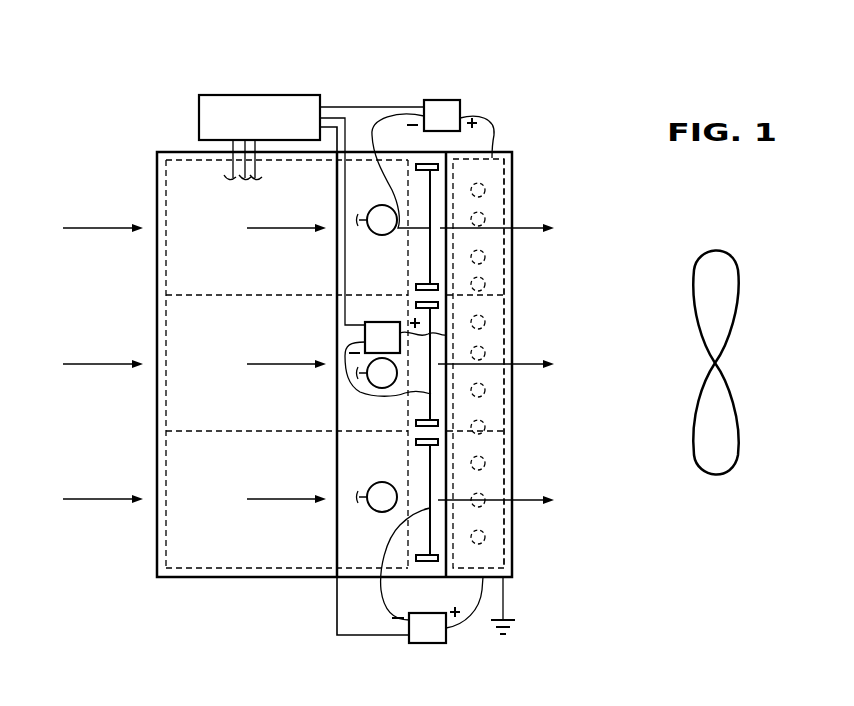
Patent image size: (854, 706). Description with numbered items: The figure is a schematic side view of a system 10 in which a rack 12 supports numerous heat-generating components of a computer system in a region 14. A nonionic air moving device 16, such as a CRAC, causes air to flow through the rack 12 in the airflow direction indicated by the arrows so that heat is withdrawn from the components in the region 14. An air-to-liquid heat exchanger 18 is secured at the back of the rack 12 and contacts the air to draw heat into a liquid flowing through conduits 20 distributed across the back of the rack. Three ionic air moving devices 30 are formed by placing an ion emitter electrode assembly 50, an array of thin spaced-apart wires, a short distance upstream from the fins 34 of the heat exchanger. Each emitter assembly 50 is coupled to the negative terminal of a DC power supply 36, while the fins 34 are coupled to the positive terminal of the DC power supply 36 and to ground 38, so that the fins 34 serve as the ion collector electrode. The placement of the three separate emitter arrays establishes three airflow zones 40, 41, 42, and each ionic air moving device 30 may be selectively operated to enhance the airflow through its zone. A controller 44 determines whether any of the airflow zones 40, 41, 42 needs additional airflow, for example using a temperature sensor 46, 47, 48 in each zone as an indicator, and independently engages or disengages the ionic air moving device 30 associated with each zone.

The system 10 is at (287, 66).
The rack 12 is at (157, 179).
The region 14 is at (175, 160).
The nonionic air moving device 16 is at (737, 318).
The air-to-liquid heat exchanger 18 is at (512, 172).
The conduits 20 is at (485, 284).
The ionic air moving device 30 is at (555, 191).
The fins 34 is at (505, 395).
The DC power supply 36 is at (449, 98).
The ground 38 is at (508, 596).
The first airflow zone 40 is at (284, 220).
The second airflow zone 41 is at (283, 356).
The third airflow zone 42 is at (284, 490).
The controller 44 is at (230, 94).
The temperature sensor 46 is at (374, 206).
The temperature sensor 47 is at (368, 383).
The temperature sensor 48 is at (375, 512).
The ion emitter electrode assembly 50 is at (430, 258).